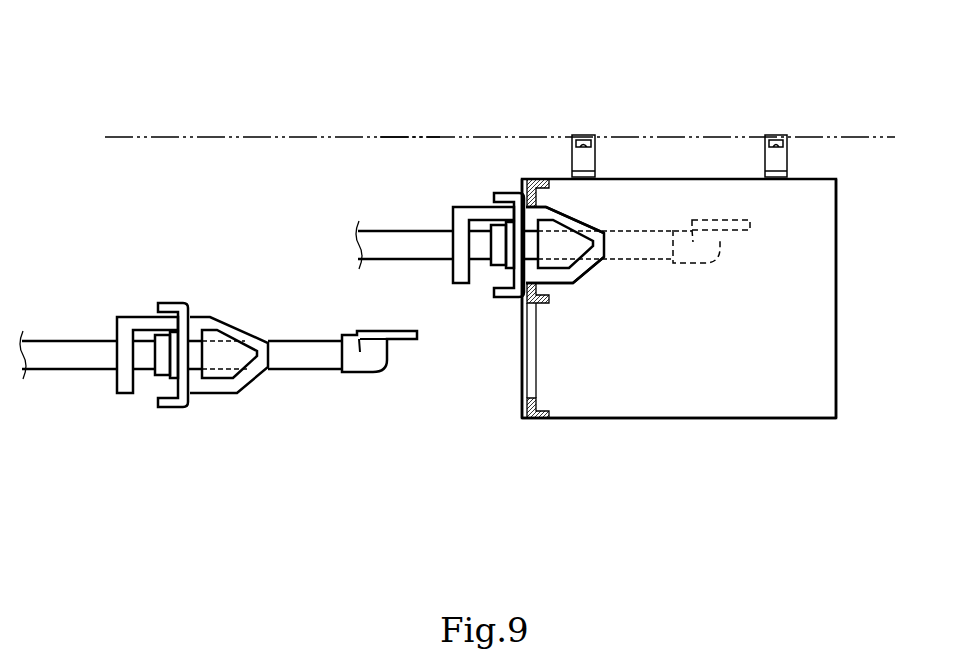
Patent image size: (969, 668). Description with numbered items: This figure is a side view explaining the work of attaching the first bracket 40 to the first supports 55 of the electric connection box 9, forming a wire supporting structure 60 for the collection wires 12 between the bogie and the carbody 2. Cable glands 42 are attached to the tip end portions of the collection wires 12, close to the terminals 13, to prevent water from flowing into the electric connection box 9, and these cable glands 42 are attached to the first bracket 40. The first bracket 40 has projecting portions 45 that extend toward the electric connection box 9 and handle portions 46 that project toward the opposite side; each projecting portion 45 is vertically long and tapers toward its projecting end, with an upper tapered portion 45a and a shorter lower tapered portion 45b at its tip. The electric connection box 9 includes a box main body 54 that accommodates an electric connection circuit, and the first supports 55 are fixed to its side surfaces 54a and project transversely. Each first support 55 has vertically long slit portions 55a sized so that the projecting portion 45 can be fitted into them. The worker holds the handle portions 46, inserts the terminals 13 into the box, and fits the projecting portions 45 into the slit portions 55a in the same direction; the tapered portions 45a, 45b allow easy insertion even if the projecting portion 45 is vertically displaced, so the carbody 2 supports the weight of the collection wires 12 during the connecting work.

The carbody 2 is at (170, 137).
The electric connection box 9 is at (836, 202).
The collection wire 12 is at (58, 363).
The terminal 13 is at (403, 343).
The first bracket 40 is at (180, 407).
The cable gland 42 is at (160, 362).
The projecting portion 45 is at (247, 385).
The upper tapered portion 45a is at (553, 213).
The lower tapered portion 45b is at (587, 270).
The handle portion 46 is at (460, 285).
The box main body 54 is at (836, 343).
The side surface 54a is at (690, 403).
The first support 55 is at (533, 422).
The slit portion 55a is at (526, 200).
The wire supporting structure 60 is at (408, 163).